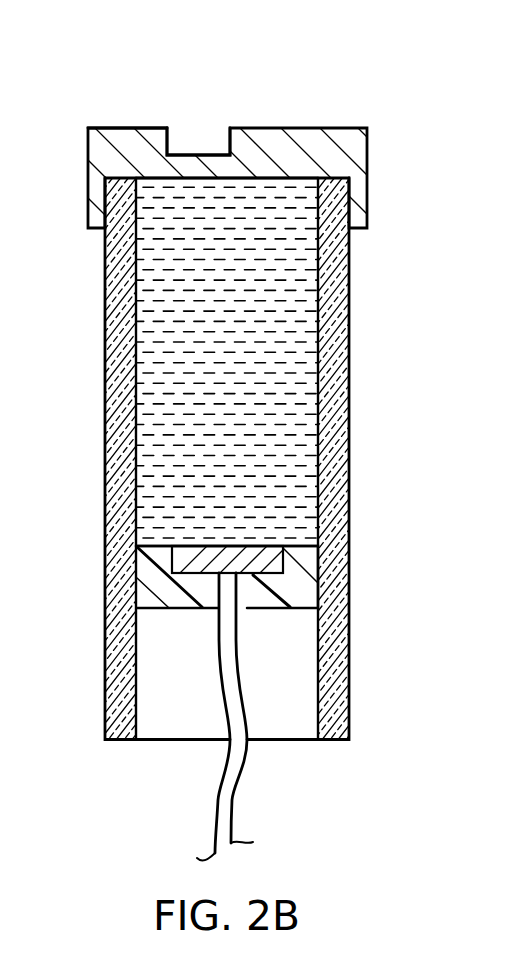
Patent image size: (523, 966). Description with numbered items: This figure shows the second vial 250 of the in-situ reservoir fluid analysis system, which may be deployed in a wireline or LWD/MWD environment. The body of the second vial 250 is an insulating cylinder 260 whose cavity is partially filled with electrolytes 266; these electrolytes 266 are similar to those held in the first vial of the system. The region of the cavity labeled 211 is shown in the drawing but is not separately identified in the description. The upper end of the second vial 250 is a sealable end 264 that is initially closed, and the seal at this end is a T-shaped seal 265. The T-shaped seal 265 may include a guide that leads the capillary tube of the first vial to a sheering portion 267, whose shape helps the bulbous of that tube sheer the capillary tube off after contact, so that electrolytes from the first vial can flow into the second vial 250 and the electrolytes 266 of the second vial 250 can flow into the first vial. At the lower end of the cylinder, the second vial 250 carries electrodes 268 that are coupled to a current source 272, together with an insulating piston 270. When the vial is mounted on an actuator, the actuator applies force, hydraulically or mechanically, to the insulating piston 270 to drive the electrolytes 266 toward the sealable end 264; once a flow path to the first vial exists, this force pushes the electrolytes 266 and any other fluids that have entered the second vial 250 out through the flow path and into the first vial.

The second vial 250 is at (312, 58).
The sealable end 264 is at (88, 152).
The T-shaped seal 265 is at (116, 127).
The sheering portion 267 is at (210, 155).
The insulating cylinder 260 is at (105, 548).
The electrolytes 266 is at (148, 355).
The fluid 211 is at (138, 284).
The electrodes 268 is at (262, 555).
The insulating piston 270 is at (177, 600).
The current source 272 is at (213, 818).